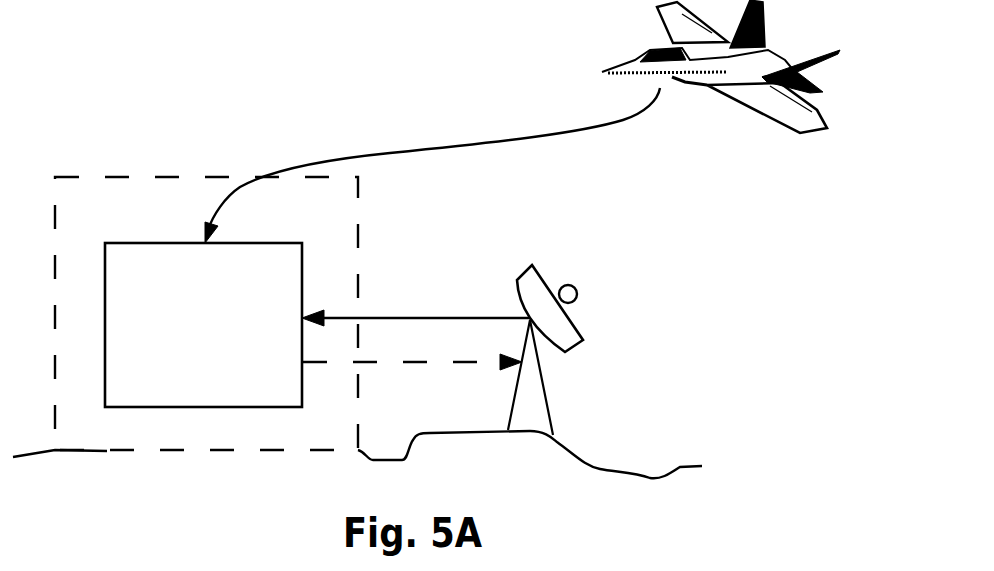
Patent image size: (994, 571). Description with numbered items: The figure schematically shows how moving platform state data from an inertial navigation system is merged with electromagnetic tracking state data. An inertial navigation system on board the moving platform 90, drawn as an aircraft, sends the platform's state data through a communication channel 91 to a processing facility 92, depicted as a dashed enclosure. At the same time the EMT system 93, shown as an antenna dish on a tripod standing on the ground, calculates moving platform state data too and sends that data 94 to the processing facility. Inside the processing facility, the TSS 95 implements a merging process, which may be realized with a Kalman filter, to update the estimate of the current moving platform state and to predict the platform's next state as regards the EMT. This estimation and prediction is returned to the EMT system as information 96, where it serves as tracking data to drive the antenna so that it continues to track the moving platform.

The moving platform 90 is at (757, 113).
The communication channel 91 is at (488, 143).
The processing facility 92 is at (203, 172).
The EMT system 93 is at (553, 423).
The EMT state data 94 is at (477, 317).
The TSS 95 is at (302, 272).
The estimation and prediction information 96 is at (478, 365).